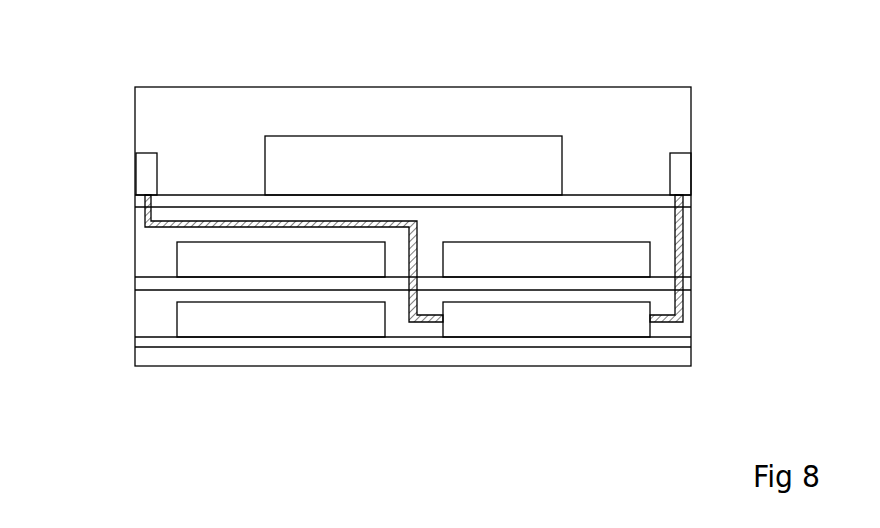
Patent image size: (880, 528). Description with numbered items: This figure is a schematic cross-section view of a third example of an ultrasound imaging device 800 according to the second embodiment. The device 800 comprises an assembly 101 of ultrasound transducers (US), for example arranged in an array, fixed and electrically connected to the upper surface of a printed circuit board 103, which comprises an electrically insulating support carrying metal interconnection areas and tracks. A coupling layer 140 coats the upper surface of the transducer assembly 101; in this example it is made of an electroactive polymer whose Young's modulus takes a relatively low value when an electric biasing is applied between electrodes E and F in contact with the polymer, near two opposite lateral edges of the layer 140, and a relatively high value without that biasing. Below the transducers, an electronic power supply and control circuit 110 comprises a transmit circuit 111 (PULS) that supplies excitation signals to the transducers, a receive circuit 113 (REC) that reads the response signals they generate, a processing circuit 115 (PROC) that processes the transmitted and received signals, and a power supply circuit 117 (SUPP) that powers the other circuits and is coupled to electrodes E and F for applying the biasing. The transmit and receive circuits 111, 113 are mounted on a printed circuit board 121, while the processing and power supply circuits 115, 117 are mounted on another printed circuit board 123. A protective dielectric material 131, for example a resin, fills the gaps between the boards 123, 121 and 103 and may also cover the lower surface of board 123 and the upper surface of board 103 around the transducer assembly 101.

The ultrasound imaging device 800 is at (126, 53).
The coupling layer 140 is at (652, 112).
The electronic power supply and control circuit 110 is at (93, 290).
The assembly of ultrasound transducers 101 is at (548, 152).
The printed circuit board 103 is at (683, 203).
The transmit circuit 111 is at (230, 260).
The receive circuit 113 is at (610, 260).
The processing circuit 115 is at (187, 316).
The power supply circuit 117 is at (593, 328).
The printed circuit board 121 is at (687, 283).
The printed circuit board 123 is at (680, 342).
The protective dielectric material 131 is at (153, 240).